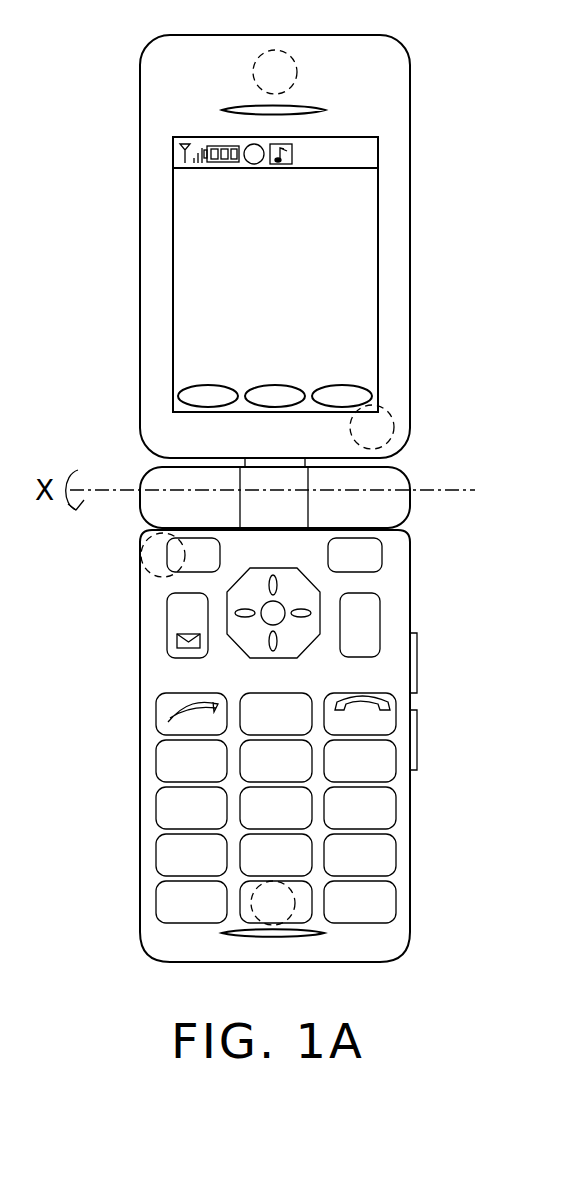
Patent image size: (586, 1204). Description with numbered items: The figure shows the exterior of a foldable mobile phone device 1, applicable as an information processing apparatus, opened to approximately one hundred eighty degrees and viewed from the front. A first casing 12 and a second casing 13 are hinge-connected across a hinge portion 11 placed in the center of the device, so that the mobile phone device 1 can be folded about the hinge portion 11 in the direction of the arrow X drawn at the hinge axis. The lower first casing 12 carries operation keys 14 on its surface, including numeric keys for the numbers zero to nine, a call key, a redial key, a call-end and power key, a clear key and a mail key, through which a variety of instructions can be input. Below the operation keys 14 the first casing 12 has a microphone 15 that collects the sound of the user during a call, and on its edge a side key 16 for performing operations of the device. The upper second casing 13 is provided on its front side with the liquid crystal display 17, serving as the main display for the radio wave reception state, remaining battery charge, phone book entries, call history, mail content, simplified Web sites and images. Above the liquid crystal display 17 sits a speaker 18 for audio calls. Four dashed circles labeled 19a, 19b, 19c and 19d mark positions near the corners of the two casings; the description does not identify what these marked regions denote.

The mobile phone device 1 is at (430, 789).
The hinge portion 11 is at (410, 470).
The first casing 12 is at (410, 560).
The second casing 13 is at (410, 230).
The operation keys 14 is at (123, 555).
The microphone 15 is at (320, 933).
The side key 16 is at (417, 655).
The liquid crystal display 17 is at (365, 192).
The speaker 18 is at (325, 110).
The antenna region 19a is at (297, 70).
The antenna region 19b is at (295, 895).
The antenna region 19c is at (394, 424).
The antenna region 19d is at (142, 538).